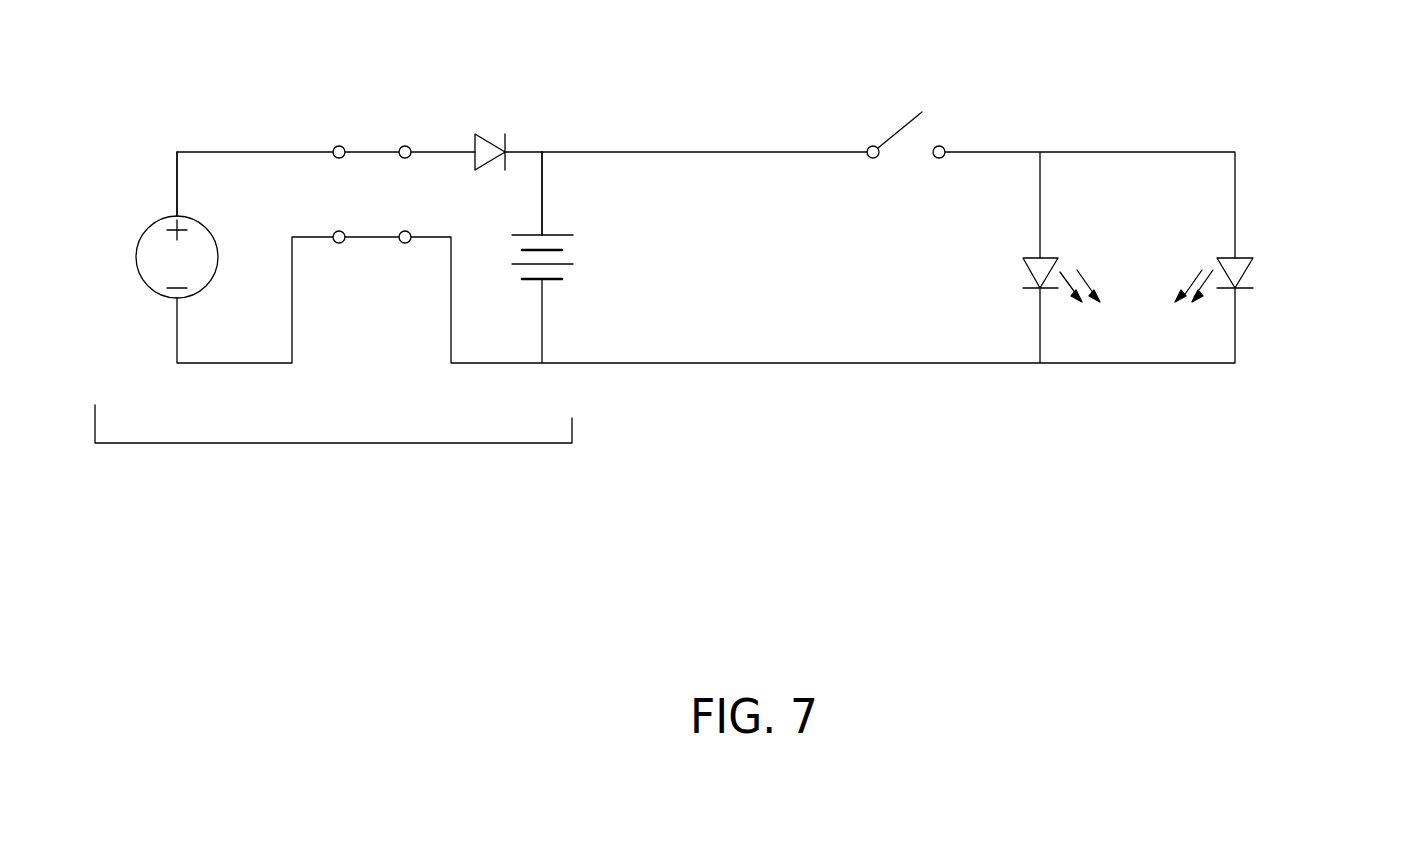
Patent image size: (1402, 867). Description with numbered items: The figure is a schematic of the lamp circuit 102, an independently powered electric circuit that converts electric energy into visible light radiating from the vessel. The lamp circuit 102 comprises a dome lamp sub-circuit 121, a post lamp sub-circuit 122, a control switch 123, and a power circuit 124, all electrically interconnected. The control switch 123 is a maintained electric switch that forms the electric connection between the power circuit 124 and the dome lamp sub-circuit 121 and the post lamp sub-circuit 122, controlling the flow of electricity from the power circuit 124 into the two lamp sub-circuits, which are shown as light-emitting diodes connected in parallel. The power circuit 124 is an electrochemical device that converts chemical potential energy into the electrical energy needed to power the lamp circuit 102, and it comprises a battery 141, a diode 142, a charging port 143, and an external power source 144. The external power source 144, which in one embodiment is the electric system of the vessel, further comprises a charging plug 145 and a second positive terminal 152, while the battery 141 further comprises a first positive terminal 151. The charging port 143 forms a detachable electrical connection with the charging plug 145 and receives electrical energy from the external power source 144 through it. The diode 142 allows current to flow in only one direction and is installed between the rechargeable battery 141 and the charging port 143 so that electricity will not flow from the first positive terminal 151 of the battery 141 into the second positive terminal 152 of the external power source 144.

The lamp circuit 102 is at (1010, 463).
The dome lamp sub-circuit 121 is at (1092, 277).
The post lamp sub-circuit 122 is at (1247, 273).
The control switch 123 is at (900, 118).
The power circuit 124 is at (333, 443).
The battery 141 is at (570, 258).
The diode 142 is at (487, 131).
The charging port 143 is at (405, 145).
The external power source 144 is at (137, 257).
The charging plug 145 is at (339, 145).
The first positive terminal 151 is at (542, 221).
The second positive terminal 152 is at (176, 200).